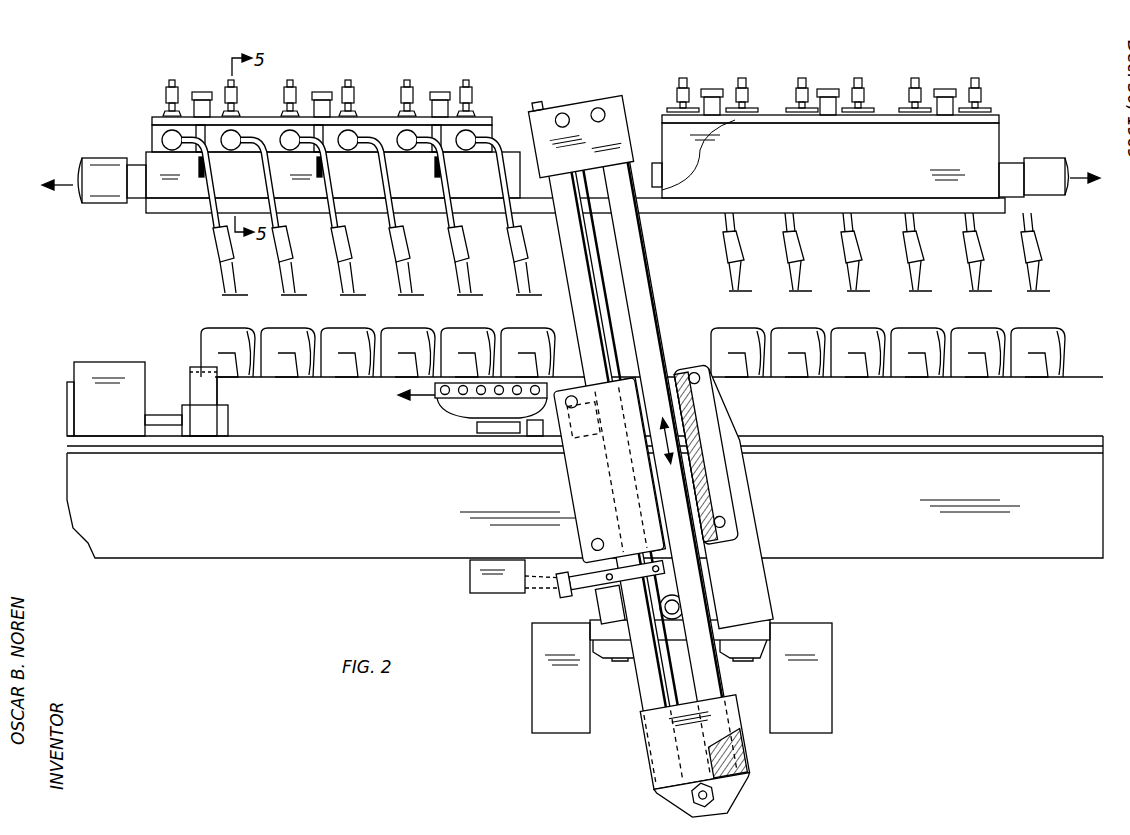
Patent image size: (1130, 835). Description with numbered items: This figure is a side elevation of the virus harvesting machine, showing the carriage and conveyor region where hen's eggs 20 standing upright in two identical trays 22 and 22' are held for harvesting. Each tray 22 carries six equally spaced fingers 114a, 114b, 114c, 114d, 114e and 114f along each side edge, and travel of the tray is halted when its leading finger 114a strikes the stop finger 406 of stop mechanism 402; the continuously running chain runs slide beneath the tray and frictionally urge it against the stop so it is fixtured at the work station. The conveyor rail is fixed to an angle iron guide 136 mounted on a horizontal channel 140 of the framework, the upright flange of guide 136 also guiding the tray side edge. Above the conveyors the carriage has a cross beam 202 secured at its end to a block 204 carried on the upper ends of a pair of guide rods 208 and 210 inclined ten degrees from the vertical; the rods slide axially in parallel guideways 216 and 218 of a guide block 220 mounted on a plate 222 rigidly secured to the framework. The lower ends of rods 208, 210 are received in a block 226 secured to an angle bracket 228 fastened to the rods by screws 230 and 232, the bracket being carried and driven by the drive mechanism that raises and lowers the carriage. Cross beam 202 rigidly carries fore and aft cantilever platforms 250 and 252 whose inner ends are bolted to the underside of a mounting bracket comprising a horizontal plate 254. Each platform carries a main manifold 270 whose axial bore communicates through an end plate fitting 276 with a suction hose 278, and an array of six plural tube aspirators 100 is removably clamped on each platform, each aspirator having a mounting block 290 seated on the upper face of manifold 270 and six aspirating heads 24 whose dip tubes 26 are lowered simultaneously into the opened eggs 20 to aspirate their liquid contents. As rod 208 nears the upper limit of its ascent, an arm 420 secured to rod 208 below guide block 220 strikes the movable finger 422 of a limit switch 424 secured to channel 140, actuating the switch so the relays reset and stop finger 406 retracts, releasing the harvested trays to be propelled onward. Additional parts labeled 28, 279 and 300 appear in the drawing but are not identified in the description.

The hen's eggs 20 is at (200, 335).
The egg tray 22 is at (626, 374).
The egg tray 22' is at (928, 357).
The aspirating head 24 is at (203, 268).
The dip tube 26 is at (346, 259).
The nozzle fitting 28 is at (207, 251).
The plural tube aspirator 100 is at (162, 137).
The tray side finger 114a is at (228, 377).
The tray side finger 114b is at (797, 378).
The tray side finger 114c is at (857, 378).
The tray side finger 114d is at (917, 378).
The tray side finger 114e is at (977, 378).
The tray side finger 114f is at (1037, 378).
The angle iron guide 136 is at (67, 395).
The horizontal channel 140 is at (222, 557).
The cross beam 202 is at (537, 106).
The block 204 is at (576, 115).
The guide rod 208 is at (598, 257).
The guide rod 210 is at (655, 270).
The guideway 216 is at (740, 478).
The guideway 218 is at (605, 487).
The guide block 220 is at (581, 471).
The plate 222 is at (760, 577).
The block 226 is at (709, 742).
The angle bracket 228 is at (703, 794).
The screw 230 is at (726, 753).
The screw 232 is at (699, 799).
The fore cantilever platform 250 is at (872, 190).
The aft cantilever platform 252 is at (150, 212).
The horizontal plate 254 is at (662, 193).
The main manifold 270 is at (360, 192).
The end plate fitting 276 is at (130, 205).
The suction hose 278 is at (85, 170).
The outlet pipe 279 is at (1045, 165).
The mounting block 290 is at (165, 117).
The manifold assembly 300 is at (310, 145).
The stop mechanism 402 is at (92, 360).
The stop finger 406 is at (190, 368).
The arm 420 is at (575, 581).
The movable finger 422 is at (575, 555).
The limit switch 424 is at (470, 577).